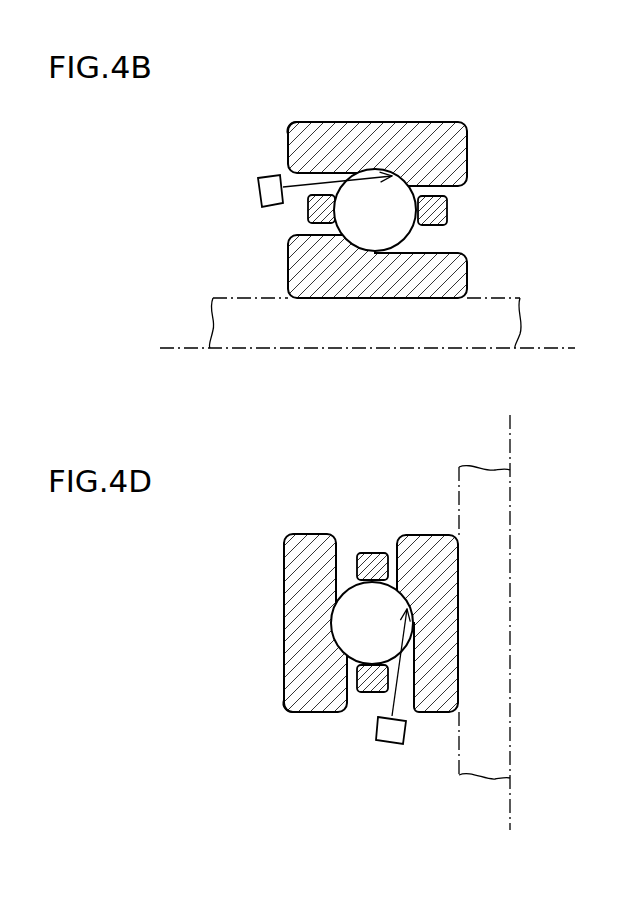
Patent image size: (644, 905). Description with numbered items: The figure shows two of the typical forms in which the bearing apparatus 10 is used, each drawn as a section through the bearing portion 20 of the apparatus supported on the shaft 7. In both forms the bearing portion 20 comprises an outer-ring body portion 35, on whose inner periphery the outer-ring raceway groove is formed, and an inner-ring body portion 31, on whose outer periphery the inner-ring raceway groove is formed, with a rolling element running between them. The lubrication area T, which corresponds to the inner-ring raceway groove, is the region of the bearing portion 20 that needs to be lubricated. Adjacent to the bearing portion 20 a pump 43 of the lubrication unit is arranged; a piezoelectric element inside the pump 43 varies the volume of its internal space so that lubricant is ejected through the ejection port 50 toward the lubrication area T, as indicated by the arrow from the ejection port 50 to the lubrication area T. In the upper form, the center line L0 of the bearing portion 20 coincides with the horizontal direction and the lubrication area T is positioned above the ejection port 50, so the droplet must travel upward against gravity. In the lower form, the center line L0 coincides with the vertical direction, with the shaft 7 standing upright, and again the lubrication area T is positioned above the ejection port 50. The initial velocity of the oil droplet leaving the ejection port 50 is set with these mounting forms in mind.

In FIG. 4B, the bearing apparatus 10 is at (397, 180).
In FIG. 4D, the bearing apparatus 10 is at (341, 593).
In FIG. 4B, the bearing portion 20 is at (335, 124).
In FIG. 4D, the bearing portion 20 is at (294, 652).
In FIG. 4B, the inner-ring body portion 31 is at (453, 268).
In FIG. 4D, the inner-ring body portion 31 is at (423, 537).
In FIG. 4B, the outer-ring body portion 35 is at (294, 126).
In FIG. 4D, the outer-ring body portion 35 is at (294, 698).
In FIG. 4B, the pump 43 is at (258, 190).
In FIG. 4D, the pump 43 is at (393, 747).
In FIG. 4B, the ejection port 50 is at (266, 205).
In FIG. 4D, the ejection port 50 is at (379, 734).
In FIG. 4B, the shaft 7 is at (498, 292).
In FIG. 4D, the shaft 7 is at (457, 491).
In FIG. 4B, the center line L0 is at (560, 347).
In FIG. 4D, the center line L0 is at (508, 815).
In FIG. 4B, the lubrication area T is at (398, 183).
In FIG. 4D, the lubrication area T is at (396, 606).